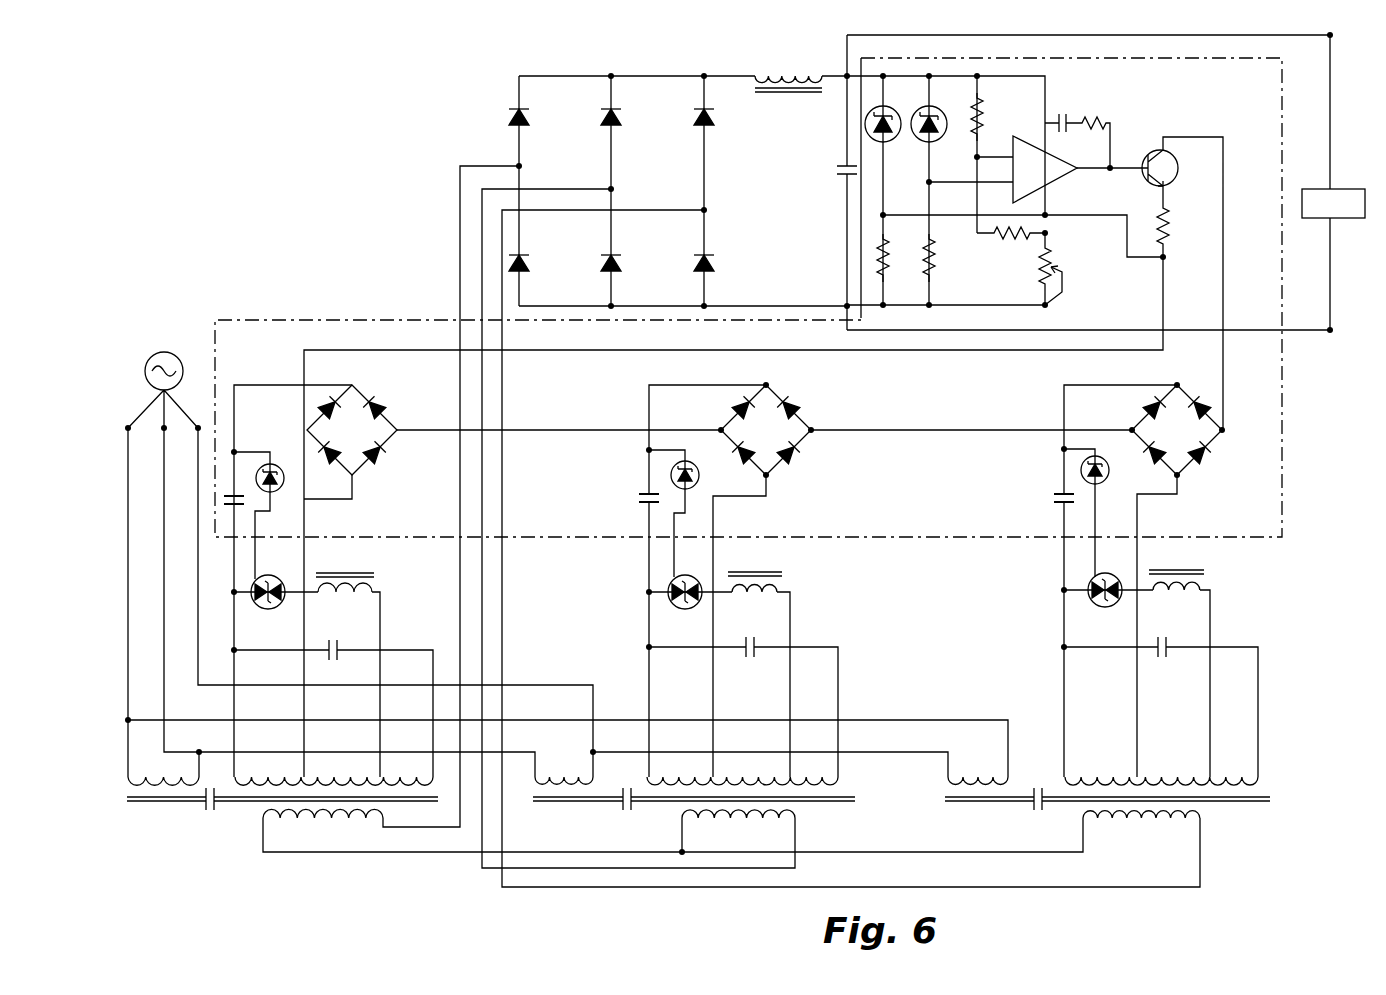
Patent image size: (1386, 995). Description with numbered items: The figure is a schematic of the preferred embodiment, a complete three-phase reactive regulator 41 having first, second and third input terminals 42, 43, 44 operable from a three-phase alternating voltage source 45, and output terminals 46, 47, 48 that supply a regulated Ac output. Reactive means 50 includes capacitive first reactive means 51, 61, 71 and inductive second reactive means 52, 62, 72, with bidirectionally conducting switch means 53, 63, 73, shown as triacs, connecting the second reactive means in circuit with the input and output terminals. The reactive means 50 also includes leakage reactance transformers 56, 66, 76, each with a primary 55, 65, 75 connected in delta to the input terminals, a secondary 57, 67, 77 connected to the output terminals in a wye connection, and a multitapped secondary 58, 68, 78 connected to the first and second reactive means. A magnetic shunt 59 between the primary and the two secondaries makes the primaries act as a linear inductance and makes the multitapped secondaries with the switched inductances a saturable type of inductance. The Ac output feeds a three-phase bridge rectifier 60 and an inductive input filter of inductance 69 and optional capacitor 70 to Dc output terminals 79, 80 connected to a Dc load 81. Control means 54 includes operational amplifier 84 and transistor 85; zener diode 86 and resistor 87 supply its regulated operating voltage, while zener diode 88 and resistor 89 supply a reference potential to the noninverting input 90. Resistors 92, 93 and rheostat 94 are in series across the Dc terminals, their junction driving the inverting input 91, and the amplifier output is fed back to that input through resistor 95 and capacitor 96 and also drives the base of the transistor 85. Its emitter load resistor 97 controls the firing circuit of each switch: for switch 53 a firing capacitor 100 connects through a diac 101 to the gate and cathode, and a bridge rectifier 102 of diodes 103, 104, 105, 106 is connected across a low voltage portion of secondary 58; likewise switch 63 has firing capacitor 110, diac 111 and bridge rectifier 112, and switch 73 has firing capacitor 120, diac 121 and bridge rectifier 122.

The three-phase reactive regulator 41 is at (453, 874).
The first input terminal 42 is at (125, 425).
The second input terminal 43 is at (163, 432).
The third input terminal 44 is at (196, 432).
The three-phase alternating voltage source 45 is at (158, 352).
The output terminal 46 is at (519, 166).
The output terminal 47 is at (611, 189).
The output terminal 48 is at (704, 210).
The reactive means 50 is at (918, 807).
The first reactive means 51 is at (338, 650).
The second reactive means 52 is at (345, 593).
The switch means 53 is at (283, 578).
The control means 54 is at (1284, 458).
The primary 55 is at (165, 772).
The leakage reactance transformer 56 is at (250, 806).
The secondary 57 is at (312, 820).
The multitapped secondary 58 is at (312, 790).
The magnetic shunt 59 is at (207, 806).
The three-phase bridge rectifier 60 is at (672, 133).
The first reactive means 61 is at (752, 638).
The second reactive means 62 is at (781, 588).
The switch means 63 is at (701, 583).
The primary 65 is at (576, 772).
The leakage reactance transformer 66 is at (675, 806).
The secondary 67 is at (732, 820).
The multitapped secondary 68 is at (738, 772).
The inductance 69 is at (776, 74).
The capacitor 70 is at (838, 176).
The first reactive means 71 is at (1168, 656).
The second reactive means 72 is at (1172, 593).
The switch means 73 is at (1120, 583).
The primary 75 is at (996, 772).
The leakage reactance transformer 76 is at (1075, 806).
The secondary 77 is at (1148, 826).
The multitapped secondary 78 is at (1158, 772).
The Dc output terminal 79 is at (1332, 38).
The Dc output terminal 80 is at (1332, 330).
The Dc load 81 is at (1340, 189).
The operational amplifier 84 is at (1064, 160).
The transistor 85 is at (1178, 163).
The zener diode 86 is at (893, 143).
The resistor 87 is at (888, 256).
The zener diode 88 is at (940, 142).
The resistor 89 is at (934, 256).
The noninverting input 90 is at (1010, 183).
The inverting input 91 is at (1010, 157).
The resistor 92 is at (981, 114).
The resistor 93 is at (1010, 242).
The rheostat 94 is at (1040, 284).
The resistor 95 is at (1100, 118).
The capacitor 96 is at (1058, 113).
The emitter load resistor 97 is at (1168, 236).
The firing capacitor 100 is at (228, 514).
The diac 101 is at (282, 470).
The bridge rectifier 102 is at (366, 445).
The diode 103 is at (326, 403).
The diode 104 is at (377, 401).
The diode 105 is at (328, 456).
The diode 106 is at (380, 461).
The firing capacitor 110 is at (640, 494).
The diac 111 is at (699, 477).
The bridge rectifier 112 is at (780, 445).
The firing capacitor 120 is at (1052, 494).
The diac 121 is at (1111, 475).
The bridge rectifier 122 is at (1190, 445).